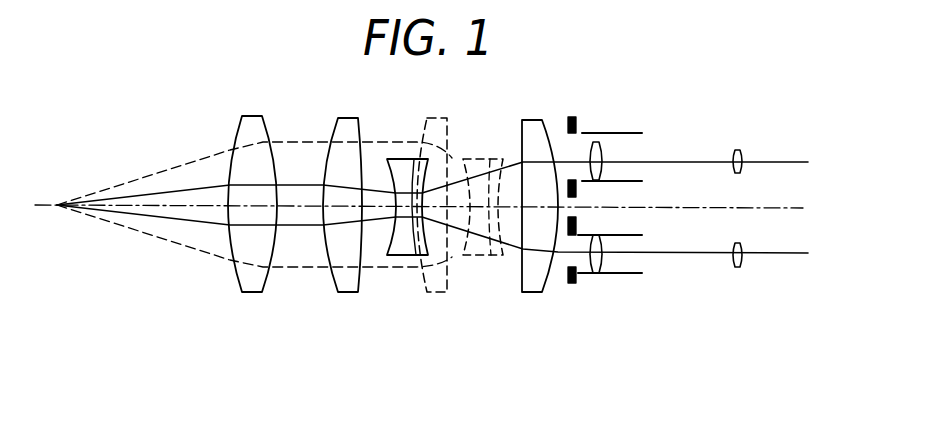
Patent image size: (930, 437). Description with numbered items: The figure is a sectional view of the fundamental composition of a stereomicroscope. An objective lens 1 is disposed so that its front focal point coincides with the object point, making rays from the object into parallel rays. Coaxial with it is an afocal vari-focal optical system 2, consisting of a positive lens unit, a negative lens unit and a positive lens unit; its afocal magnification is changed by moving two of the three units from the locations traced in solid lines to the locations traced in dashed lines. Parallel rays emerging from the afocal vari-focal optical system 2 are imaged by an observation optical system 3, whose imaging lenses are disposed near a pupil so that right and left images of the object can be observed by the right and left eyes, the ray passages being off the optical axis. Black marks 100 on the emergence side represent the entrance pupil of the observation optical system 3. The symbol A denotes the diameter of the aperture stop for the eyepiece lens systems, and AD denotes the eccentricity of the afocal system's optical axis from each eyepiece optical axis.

The objective lens 1 is at (252, 292).
The afocal vari-focal optical system 2 is at (567, 313).
The observation optical system 3 is at (777, 313).
The black marks 100 is at (567, 120).
The diameter of an aperture stop A is at (625, 202).
The eccentricity of the optical axis AD is at (788, 199).